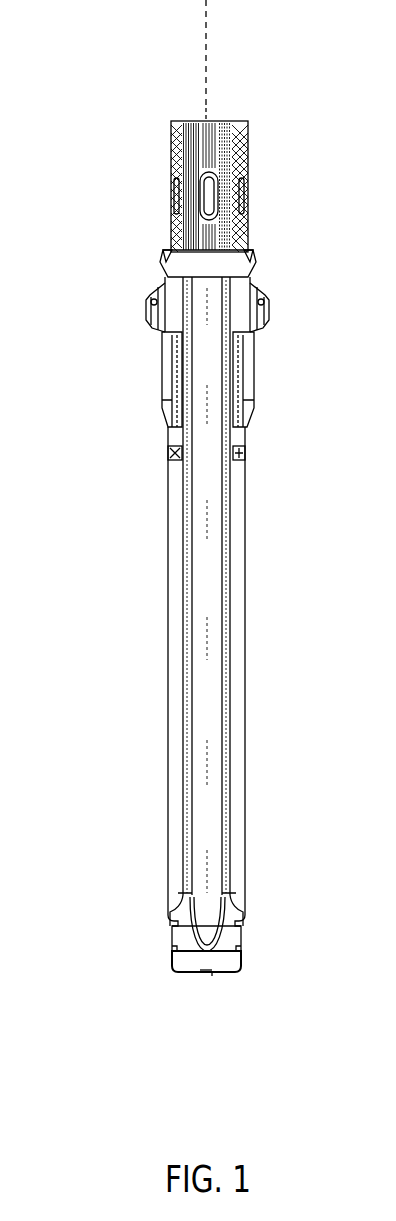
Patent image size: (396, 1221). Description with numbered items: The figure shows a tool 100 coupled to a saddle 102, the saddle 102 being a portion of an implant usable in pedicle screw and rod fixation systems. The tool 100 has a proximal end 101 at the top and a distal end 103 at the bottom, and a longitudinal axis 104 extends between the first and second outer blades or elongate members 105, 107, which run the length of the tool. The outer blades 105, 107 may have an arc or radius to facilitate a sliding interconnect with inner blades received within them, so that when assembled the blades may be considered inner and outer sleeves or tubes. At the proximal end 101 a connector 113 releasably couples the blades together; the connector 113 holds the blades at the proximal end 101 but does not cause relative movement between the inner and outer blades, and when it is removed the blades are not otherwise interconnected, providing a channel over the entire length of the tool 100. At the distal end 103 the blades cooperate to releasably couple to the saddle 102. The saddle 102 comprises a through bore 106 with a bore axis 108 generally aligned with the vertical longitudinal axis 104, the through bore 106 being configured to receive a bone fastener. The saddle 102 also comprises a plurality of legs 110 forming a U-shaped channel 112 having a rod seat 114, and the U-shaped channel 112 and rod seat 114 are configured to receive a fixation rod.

The tool 100 is at (59, 791).
The proximal end 101 is at (113, 293).
The saddle 102 is at (232, 968).
The distal end 103 is at (290, 900).
The longitudinal axis 104 is at (206, 47).
The first outer blade 105 is at (248, 540).
The through bore 106 is at (200, 972).
The second outer blade 107 is at (167, 540).
The bore axis 108 is at (213, 1000).
The legs 110 is at (170, 933).
The U-shaped channel 112 is at (200, 917).
The connector 113 is at (248, 157).
The rod seat 114 is at (205, 973).